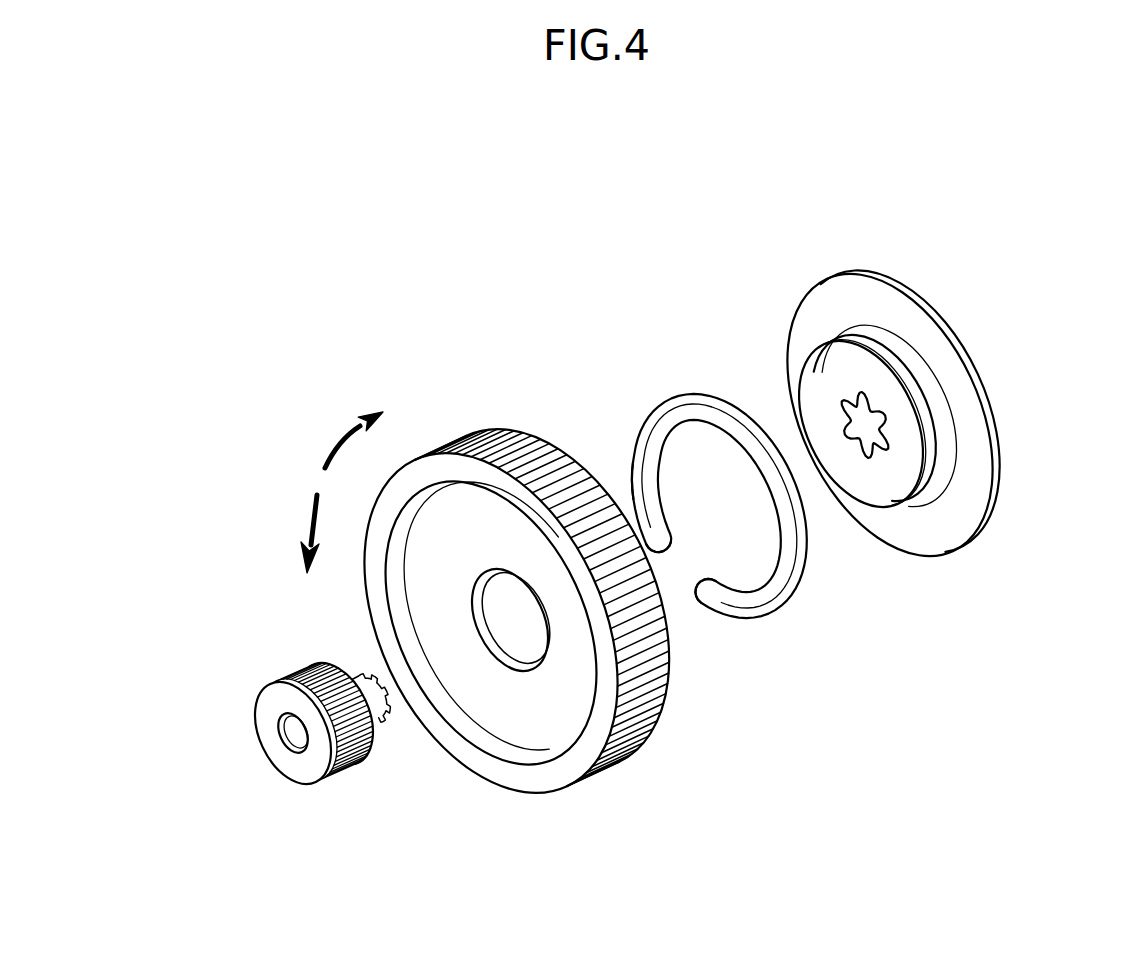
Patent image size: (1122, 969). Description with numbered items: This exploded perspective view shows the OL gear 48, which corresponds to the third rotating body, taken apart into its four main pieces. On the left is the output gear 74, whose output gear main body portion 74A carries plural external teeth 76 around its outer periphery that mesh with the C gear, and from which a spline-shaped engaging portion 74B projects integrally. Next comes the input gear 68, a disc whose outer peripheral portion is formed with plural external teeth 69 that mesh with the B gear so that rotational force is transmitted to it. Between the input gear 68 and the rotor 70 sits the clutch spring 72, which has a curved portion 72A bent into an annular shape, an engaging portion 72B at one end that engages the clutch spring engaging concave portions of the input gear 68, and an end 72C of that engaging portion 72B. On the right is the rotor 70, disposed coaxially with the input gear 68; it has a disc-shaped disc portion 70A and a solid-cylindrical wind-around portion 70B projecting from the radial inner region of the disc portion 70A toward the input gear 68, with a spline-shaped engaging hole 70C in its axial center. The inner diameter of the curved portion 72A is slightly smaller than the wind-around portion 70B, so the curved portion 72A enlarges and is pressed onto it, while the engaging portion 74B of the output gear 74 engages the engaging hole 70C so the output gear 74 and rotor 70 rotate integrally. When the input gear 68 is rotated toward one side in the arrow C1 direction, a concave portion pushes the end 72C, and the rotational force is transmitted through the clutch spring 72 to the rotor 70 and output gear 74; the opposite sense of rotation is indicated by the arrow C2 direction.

The OL gear 48 is at (439, 275).
The input gear 68 is at (519, 420).
The external teeth 69 is at (555, 477).
The rotor 70 is at (915, 281).
The disc portion 70A is at (950, 340).
The wind-around portion 70B is at (932, 468).
The engaging hole 70C is at (878, 410).
The clutch spring 72 is at (697, 382).
The curved portion 72A is at (808, 540).
The engaging portion 72B is at (637, 512).
The end 72C is at (668, 556).
The output gear 74 is at (287, 673).
The output gear main body portion 74A is at (287, 760).
The engaging portion 74B is at (387, 710).
The external teeth 76 is at (350, 763).
The arrow C1 direction C1 is at (343, 438).
The second rotation direction C2 is at (303, 523).